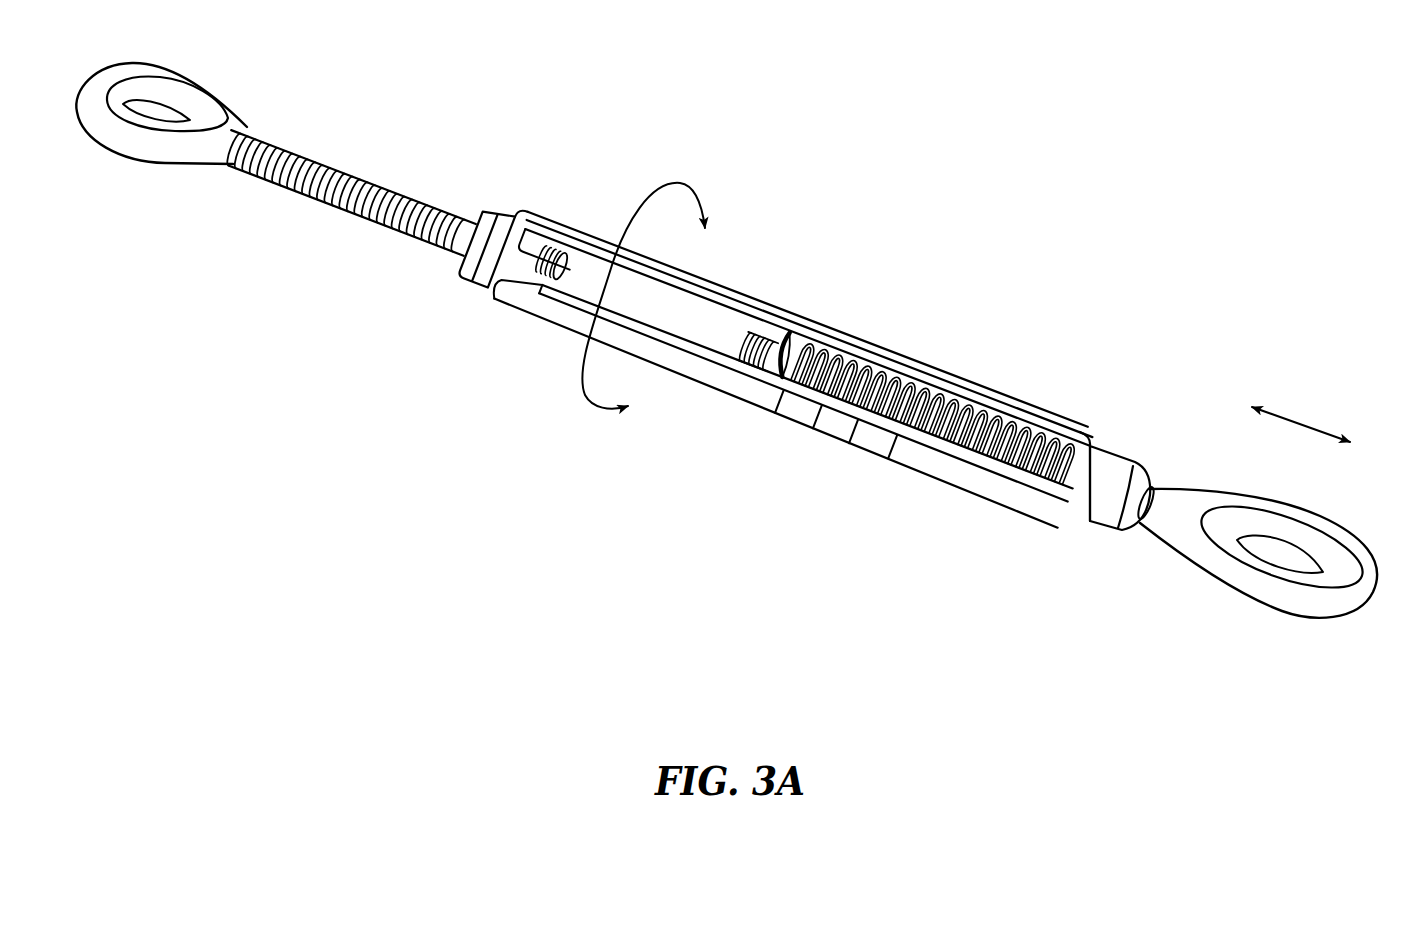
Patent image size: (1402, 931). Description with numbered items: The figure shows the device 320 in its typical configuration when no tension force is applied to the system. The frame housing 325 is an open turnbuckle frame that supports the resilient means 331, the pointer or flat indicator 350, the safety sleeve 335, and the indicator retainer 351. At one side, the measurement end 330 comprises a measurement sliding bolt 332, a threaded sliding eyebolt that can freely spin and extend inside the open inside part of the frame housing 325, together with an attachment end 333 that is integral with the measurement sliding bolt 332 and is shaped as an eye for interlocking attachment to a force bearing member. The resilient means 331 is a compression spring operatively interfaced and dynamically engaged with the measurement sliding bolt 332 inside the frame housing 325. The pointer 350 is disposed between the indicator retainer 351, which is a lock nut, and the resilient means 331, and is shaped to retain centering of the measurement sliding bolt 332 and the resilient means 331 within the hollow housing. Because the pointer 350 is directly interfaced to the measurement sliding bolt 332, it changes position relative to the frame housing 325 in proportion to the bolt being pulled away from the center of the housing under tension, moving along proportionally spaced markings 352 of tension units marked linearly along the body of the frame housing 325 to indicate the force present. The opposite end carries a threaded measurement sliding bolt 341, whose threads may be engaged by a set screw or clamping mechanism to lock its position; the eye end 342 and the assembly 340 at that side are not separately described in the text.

The device 320 is at (621, 544).
The frame housing 325 is at (730, 377).
The measurement end 330 is at (1049, 260).
The resilient means 331 is at (913, 380).
The measurement sliding bolt 332 is at (1143, 513).
The attachment end 333 is at (1300, 600).
The safety sleeve 335 is at (1025, 430).
The first eye bolt assembly 340 is at (658, 146).
The measurement sliding bolt 341 is at (347, 207).
The eye of first eye bolt 342 is at (177, 150).
The pointer 350 is at (790, 338).
The indicator retainer 351 is at (782, 332).
The proportionally spaced markings 352 is at (800, 422).